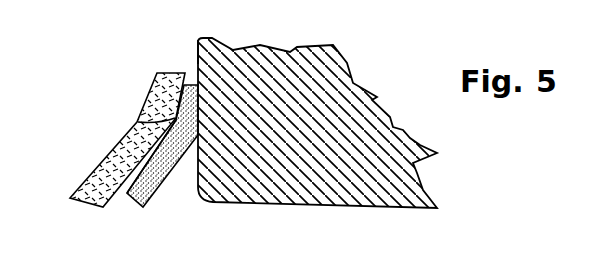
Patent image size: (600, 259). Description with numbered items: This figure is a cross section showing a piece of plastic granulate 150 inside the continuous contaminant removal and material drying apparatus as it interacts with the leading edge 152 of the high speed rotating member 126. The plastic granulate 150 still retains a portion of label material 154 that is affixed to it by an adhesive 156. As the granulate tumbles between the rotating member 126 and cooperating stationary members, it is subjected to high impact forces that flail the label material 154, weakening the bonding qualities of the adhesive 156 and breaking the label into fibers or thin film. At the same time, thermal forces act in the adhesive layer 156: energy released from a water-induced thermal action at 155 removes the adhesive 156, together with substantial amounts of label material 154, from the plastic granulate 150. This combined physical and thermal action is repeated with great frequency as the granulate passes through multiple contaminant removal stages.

The rotating member 126 is at (300, 206).
The leading edge 152 is at (198, 60).
The plastic granulate 150 is at (70, 200).
The water-induced thermal action 155 is at (139, 122).
The label material 154 is at (162, 176).
The adhesive 156 is at (118, 196).